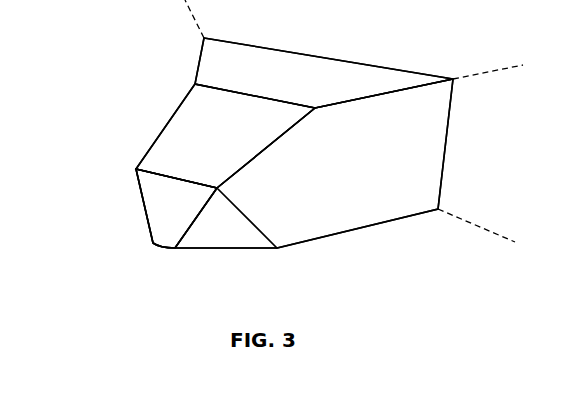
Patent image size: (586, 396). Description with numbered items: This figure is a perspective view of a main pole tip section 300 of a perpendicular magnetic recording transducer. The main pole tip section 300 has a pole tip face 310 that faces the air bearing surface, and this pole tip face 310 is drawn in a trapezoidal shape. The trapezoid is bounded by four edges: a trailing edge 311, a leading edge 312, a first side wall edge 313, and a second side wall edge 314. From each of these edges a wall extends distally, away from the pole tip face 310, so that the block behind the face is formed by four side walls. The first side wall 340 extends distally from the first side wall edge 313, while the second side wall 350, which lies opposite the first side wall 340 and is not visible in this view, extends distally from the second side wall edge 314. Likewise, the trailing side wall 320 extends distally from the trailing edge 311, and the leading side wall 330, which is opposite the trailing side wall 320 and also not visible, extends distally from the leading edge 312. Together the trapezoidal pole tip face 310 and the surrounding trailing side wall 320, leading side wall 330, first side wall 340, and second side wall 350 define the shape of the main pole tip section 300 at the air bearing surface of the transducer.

The main pole tip section 300 is at (405, 44).
The pole tip face 310 is at (173, 213).
The trailing edge 311 is at (170, 176).
The leading edge 312 is at (165, 251).
The first side wall edge 313 is at (198, 225).
The second side wall edge 314 is at (142, 200).
The trailing side wall 320 is at (210, 143).
The leading side wall 330 is at (205, 264).
The first side wall 340 is at (260, 197).
The second side wall 350 is at (172, 97).